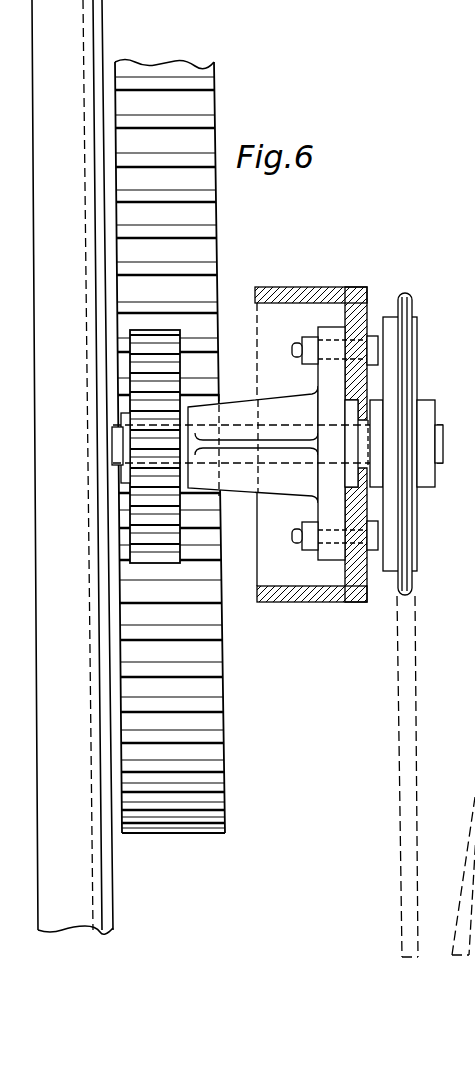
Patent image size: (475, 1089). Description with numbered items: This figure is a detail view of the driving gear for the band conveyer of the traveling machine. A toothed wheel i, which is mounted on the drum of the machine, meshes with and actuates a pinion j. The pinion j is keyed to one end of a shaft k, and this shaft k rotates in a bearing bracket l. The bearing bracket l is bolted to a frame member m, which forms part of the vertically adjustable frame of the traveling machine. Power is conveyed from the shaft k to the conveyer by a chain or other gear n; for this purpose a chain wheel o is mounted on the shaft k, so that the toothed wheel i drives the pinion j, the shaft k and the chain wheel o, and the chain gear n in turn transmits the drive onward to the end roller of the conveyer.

The toothed wheel i is at (188, 221).
The pinion j is at (153, 343).
The shaft k is at (440, 433).
The bearing bracket l is at (277, 410).
The frame member m is at (302, 293).
The chain or other gear n is at (400, 650).
The chain wheel o is at (408, 306).